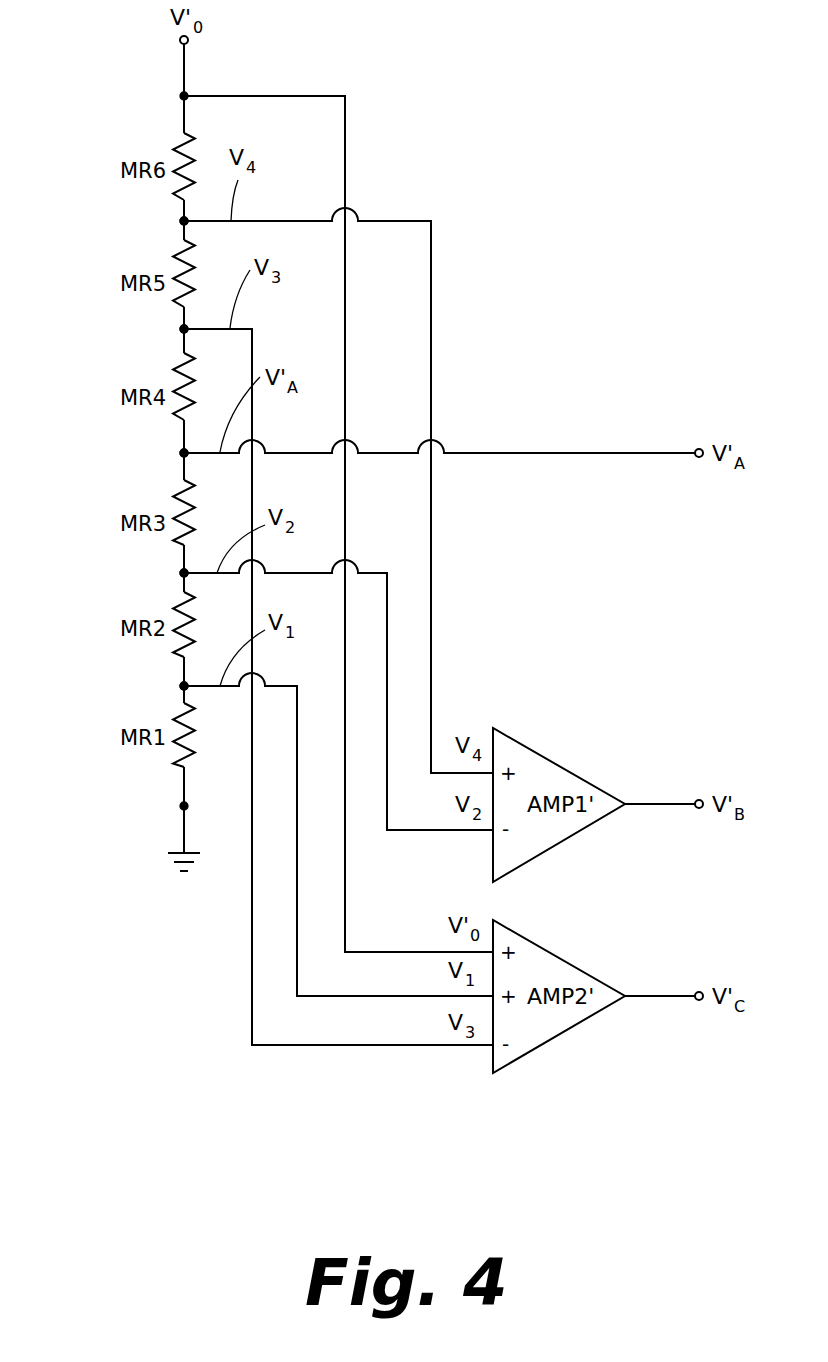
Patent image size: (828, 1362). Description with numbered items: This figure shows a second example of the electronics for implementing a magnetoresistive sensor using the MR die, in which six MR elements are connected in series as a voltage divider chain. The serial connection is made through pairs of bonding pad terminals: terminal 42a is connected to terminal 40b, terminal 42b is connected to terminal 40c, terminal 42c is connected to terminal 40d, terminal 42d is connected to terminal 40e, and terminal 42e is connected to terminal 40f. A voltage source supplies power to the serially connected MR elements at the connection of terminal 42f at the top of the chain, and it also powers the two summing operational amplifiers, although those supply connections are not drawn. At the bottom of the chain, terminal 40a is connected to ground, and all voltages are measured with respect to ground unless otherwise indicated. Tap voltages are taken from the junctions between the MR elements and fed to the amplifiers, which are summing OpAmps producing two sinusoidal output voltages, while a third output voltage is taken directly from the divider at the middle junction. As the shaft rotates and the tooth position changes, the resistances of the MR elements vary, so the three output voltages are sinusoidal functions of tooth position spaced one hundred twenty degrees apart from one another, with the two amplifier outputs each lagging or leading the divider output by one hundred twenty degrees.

The terminal (bonding pad) 40a is at (184, 806).
The terminal (bonding pad) 40b is at (184, 686).
The terminal (bonding pad) 40c is at (184, 573).
The terminal (bonding pad) 40d is at (184, 453).
The terminal (bonding pad) 40e is at (184, 329).
The terminal (bonding pad) 40f is at (184, 221).
The terminal (bonding pad) 42a is at (184, 686).
The terminal (bonding pad) 42b is at (184, 573).
The terminal (bonding pad) 42c is at (184, 453).
The terminal (bonding pad) 42d is at (184, 329).
The terminal (bonding pad) 42e is at (184, 221).
The terminal (bonding pad) 42f is at (184, 96).